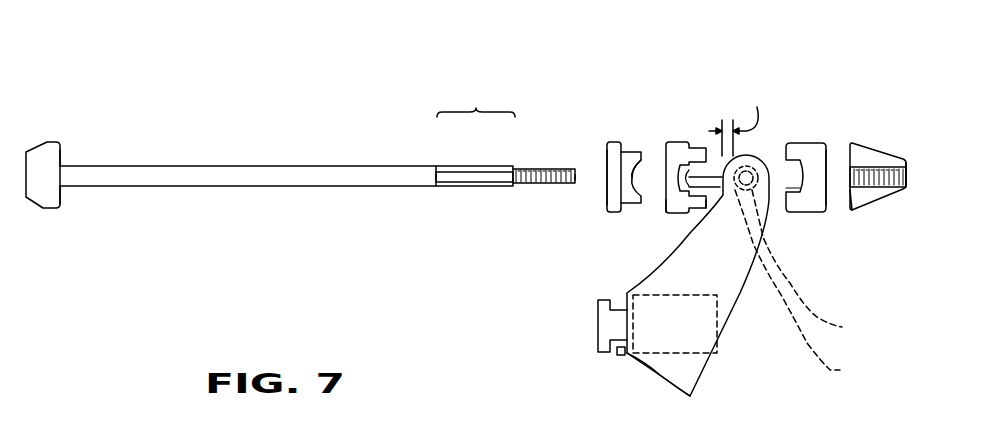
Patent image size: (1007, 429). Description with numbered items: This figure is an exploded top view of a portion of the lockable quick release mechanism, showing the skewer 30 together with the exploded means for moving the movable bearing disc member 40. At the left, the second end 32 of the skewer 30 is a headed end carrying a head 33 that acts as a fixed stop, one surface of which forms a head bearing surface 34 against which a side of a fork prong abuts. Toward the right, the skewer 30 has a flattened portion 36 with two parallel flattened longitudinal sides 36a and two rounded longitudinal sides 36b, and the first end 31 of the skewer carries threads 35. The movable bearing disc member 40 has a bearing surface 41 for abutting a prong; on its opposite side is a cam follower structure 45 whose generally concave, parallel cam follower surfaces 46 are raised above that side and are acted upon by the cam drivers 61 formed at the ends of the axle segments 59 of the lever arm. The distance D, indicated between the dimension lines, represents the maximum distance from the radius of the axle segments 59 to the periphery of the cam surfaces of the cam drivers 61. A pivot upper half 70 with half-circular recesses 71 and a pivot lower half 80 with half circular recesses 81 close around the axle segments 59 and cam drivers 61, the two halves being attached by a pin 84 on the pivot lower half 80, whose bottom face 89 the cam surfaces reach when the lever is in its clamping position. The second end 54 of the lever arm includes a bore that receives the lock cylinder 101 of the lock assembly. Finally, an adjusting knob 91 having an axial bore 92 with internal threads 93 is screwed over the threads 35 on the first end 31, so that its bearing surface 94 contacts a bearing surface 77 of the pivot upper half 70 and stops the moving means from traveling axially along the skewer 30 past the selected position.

The skewer 30 is at (235, 148).
The first end 31 is at (580, 176).
The second end 32 is at (62, 180).
The head 33 is at (43, 150).
The head bearing surface 34 is at (61, 149).
The threads 35 is at (546, 168).
The flattened portion 36 is at (476, 96).
The flattened longitudinal sides 36a is at (472, 181).
The rounded longitudinal sides 36b is at (462, 166).
The movable bearing disc member 40 is at (609, 142).
The bearing surface 41 is at (607, 160).
The cam follower structure 45 is at (631, 150).
The cam follower surfaces 46 is at (645, 155).
The second end of the lever arm 54 is at (700, 372).
The axle segments 59 is at (815, 267).
The cam drivers 61 is at (806, 287).
The pivot upper half 70 is at (796, 142).
The half-circular recesses 71 is at (772, 238).
The bearing surface of the pivot upper half 77 is at (830, 142).
The pivot lower half 80 is at (694, 142).
The half circular recesses 81 is at (708, 216).
The pin 84 is at (698, 146).
The bottom face 89 is at (664, 213).
The adjusting knob 91 is at (871, 146).
The axial bore 92 is at (880, 166).
The internal threads 93 is at (904, 163).
The bearing surface of the knob 94 is at (853, 193).
The lock cylinder 101 is at (603, 343).
The distance D is at (733, 117).